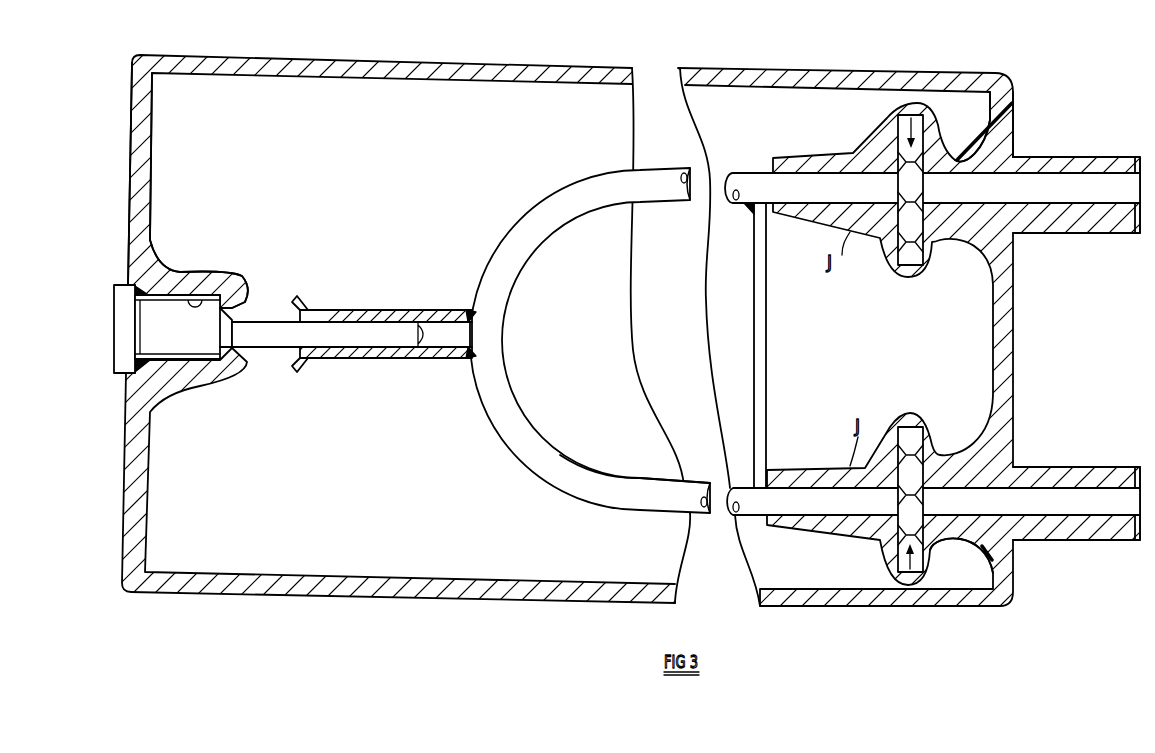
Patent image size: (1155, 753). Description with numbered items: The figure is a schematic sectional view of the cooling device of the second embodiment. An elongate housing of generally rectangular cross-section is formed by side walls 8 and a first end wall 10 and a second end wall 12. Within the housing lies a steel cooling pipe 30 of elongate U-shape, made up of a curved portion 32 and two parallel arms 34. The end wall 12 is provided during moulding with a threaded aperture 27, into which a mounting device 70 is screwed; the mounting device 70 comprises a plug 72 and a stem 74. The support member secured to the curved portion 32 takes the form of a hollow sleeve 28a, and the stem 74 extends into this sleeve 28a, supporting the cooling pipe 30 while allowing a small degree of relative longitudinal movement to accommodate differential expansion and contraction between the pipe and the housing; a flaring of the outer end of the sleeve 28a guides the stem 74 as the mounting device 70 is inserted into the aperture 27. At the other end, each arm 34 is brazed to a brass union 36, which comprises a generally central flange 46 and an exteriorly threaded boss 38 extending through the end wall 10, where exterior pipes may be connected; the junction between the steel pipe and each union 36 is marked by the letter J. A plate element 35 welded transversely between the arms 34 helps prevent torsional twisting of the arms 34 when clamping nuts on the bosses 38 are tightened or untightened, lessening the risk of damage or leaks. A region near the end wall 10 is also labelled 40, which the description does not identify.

The side walls 8 is at (283, 67).
The first end wall 10 is at (1012, 103).
The second end wall 12 is at (150, 153).
The threaded aperture 27 is at (215, 280).
The hollow sleeve 28a is at (417, 300).
The cooling pipe 30 is at (586, 507).
The curved portion 32 is at (507, 380).
The parallel arms 34 is at (756, 187).
The plate element 35 is at (769, 330).
The brass union 36 is at (913, 117).
The exteriorly threaded boss 38 is at (1073, 167).
The end wall 40 is at (1013, 143).
The central flange 46 is at (987, 138).
The mounting device 70 is at (111, 388).
The plug 72 is at (116, 343).
The stem 74 is at (352, 342).